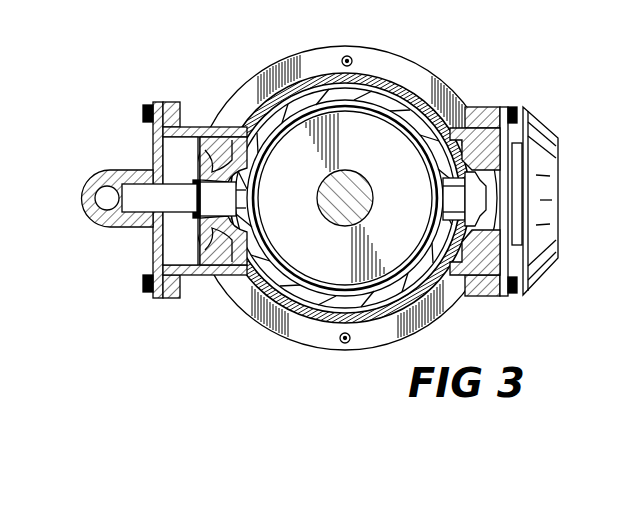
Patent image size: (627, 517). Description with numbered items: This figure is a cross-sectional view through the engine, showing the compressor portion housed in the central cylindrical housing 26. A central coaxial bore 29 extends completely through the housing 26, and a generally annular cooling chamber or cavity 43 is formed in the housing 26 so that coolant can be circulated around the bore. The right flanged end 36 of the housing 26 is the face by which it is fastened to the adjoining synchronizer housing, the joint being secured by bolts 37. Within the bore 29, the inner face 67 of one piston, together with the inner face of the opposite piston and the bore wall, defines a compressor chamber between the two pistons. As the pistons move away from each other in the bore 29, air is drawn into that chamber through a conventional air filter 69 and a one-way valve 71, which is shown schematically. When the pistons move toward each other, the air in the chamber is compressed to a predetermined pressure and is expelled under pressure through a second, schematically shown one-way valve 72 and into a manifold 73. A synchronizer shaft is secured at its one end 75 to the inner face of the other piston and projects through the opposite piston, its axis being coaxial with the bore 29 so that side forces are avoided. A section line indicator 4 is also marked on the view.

The section line 4- 4 is at (505, 0).
The central cylindrical housing 26 is at (247, 96).
The bore 29 is at (292, 280).
The right flanged end 36 is at (297, 63).
The bolts 37 is at (352, 60).
The cooling chamber 43 is at (305, 309).
The inner face of piston 67 is at (381, 282).
The air filter 69 is at (549, 140).
The one-way valve 71 is at (453, 195).
The one-way valve 72 is at (188, 206).
The manifold 73 is at (98, 176).
The end of shaft 75 is at (363, 188).